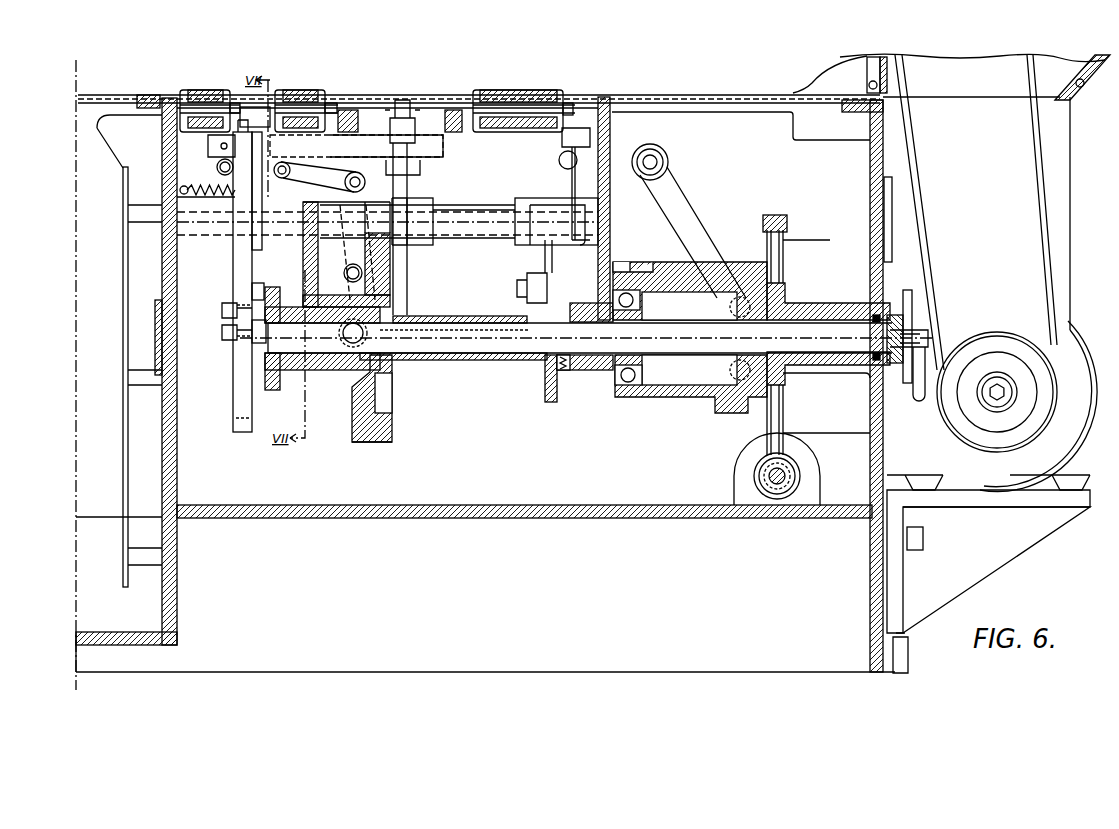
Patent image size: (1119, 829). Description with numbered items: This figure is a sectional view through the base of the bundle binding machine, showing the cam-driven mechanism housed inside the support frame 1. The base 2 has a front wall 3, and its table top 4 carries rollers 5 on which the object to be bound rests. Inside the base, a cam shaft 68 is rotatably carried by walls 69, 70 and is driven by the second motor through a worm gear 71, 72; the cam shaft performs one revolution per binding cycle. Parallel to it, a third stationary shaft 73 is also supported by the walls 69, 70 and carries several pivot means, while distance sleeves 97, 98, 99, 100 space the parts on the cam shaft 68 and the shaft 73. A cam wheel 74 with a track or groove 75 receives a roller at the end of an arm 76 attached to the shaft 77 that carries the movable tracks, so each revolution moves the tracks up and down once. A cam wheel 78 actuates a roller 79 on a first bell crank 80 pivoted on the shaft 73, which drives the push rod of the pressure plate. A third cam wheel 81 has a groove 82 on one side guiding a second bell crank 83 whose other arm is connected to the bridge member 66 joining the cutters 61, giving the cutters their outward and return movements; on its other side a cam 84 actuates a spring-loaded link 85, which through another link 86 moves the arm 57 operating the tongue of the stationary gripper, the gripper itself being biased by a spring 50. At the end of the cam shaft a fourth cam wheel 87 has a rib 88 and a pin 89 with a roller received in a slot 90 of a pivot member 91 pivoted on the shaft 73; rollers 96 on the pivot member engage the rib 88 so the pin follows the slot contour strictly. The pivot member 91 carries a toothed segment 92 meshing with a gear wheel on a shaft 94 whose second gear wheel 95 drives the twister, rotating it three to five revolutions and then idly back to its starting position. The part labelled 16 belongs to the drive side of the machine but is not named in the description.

The support frame 1 is at (893, 158).
The base 2 is at (162, 425).
The front wall 3 is at (741, 272).
The table top 4 is at (698, 96).
The rollers 5 is at (508, 94).
The motor mounting plate 16 is at (972, 483).
The spring 50 is at (210, 186).
The arm 57 is at (285, 140).
The cutters 61 is at (455, 110).
The bridge member 66 is at (415, 115).
The cam shaft 68 is at (453, 352).
The wall 69 is at (327, 372).
The wall 70 is at (596, 372).
The worm gear 71 is at (800, 478).
The worm gear 72 is at (784, 412).
The third stationary shaft 73 is at (492, 236).
The cam wheel 74 is at (690, 410).
The track or groove 75 is at (638, 262).
The arm 76 is at (683, 206).
The shaft 77 is at (655, 160).
The cam wheel 78 is at (544, 393).
The roller 79 is at (549, 275).
The first bell crank 80 is at (552, 213).
The third cam wheel 81 is at (395, 433).
The groove 82 is at (393, 380).
The second bell crank 83 is at (430, 204).
The cam 84 is at (355, 419).
The link 85 is at (408, 290).
The link 86 is at (315, 179).
The fourth cam wheel 87 is at (276, 390).
The rib 88 is at (283, 304).
The pin 89 is at (252, 283).
The slot 90 is at (236, 418).
The pivot member 91 is at (240, 392).
The toothed segment 92 is at (276, 238).
The shaft 94 is at (368, 158).
The second gear wheel 95 is at (412, 172).
The rollers 96 is at (258, 342).
The distance sleeve 97 is at (503, 357).
The distance sleeve 98 is at (300, 240).
The distance sleeve 99 is at (368, 205).
The distance sleeve 100 is at (465, 208).